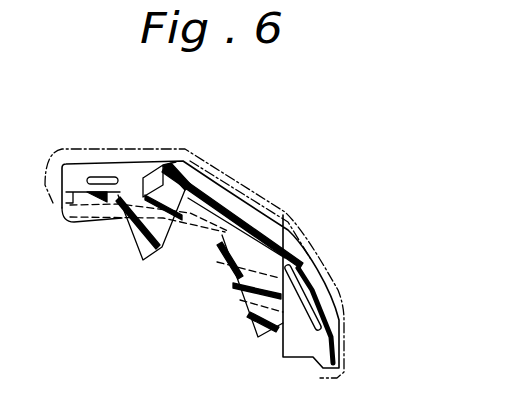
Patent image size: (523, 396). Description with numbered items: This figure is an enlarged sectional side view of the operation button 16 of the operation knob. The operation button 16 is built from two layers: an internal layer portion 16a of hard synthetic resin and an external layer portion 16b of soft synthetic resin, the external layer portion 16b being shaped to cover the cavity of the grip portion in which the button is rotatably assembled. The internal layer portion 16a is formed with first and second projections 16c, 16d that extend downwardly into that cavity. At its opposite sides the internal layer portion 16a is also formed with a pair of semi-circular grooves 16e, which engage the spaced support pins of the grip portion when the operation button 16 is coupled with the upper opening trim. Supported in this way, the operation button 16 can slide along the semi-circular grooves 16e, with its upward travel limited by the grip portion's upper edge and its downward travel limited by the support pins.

The operation button 16 is at (297, 220).
The internal layer portion 16a is at (328, 318).
The external layer portion 16b is at (132, 154).
The first projection 16c is at (260, 312).
The second projection 16d is at (143, 248).
The semi-circular grooves 16e is at (232, 210).